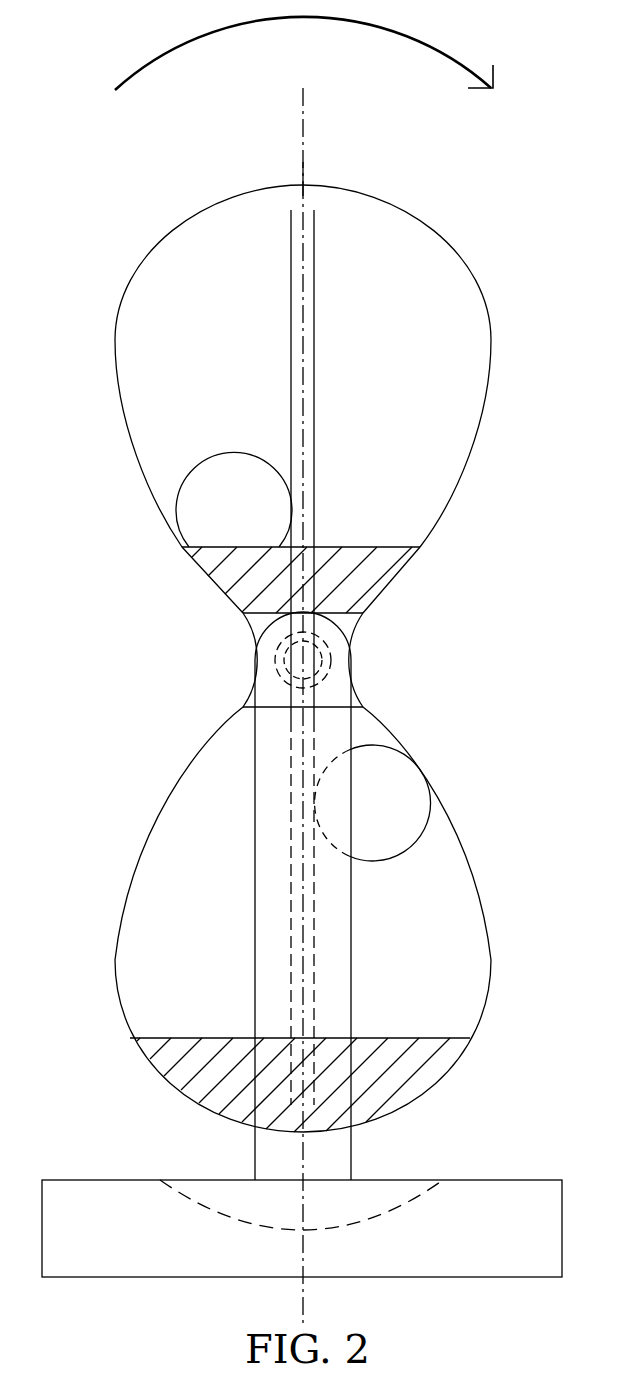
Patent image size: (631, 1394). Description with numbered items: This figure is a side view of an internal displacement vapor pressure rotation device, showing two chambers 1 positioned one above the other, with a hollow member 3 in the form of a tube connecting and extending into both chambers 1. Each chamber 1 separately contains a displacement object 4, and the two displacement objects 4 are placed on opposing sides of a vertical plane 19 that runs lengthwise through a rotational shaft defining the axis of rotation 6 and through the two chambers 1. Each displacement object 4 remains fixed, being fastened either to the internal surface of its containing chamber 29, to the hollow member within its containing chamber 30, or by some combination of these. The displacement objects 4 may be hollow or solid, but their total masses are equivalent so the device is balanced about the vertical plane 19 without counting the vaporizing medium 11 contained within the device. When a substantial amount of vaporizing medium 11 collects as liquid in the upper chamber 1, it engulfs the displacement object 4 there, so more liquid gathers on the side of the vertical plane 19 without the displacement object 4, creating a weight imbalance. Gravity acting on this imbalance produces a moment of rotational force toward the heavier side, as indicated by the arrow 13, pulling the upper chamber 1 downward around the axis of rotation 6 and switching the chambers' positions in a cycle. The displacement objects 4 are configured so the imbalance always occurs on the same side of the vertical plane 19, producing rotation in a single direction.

The chamber 1 is at (115, 342).
The hollow member 3 is at (314, 400).
The displacement object 4 is at (186, 480).
The axis of rotation 6 is at (287, 660).
The vaporizing medium 11 is at (363, 577).
The arrow 13 is at (305, 20).
The vertical plane 19 is at (303, 162).
The internal surface of containing chamber 29 is at (188, 554).
The hollow member within containing chamber 30 is at (291, 517).